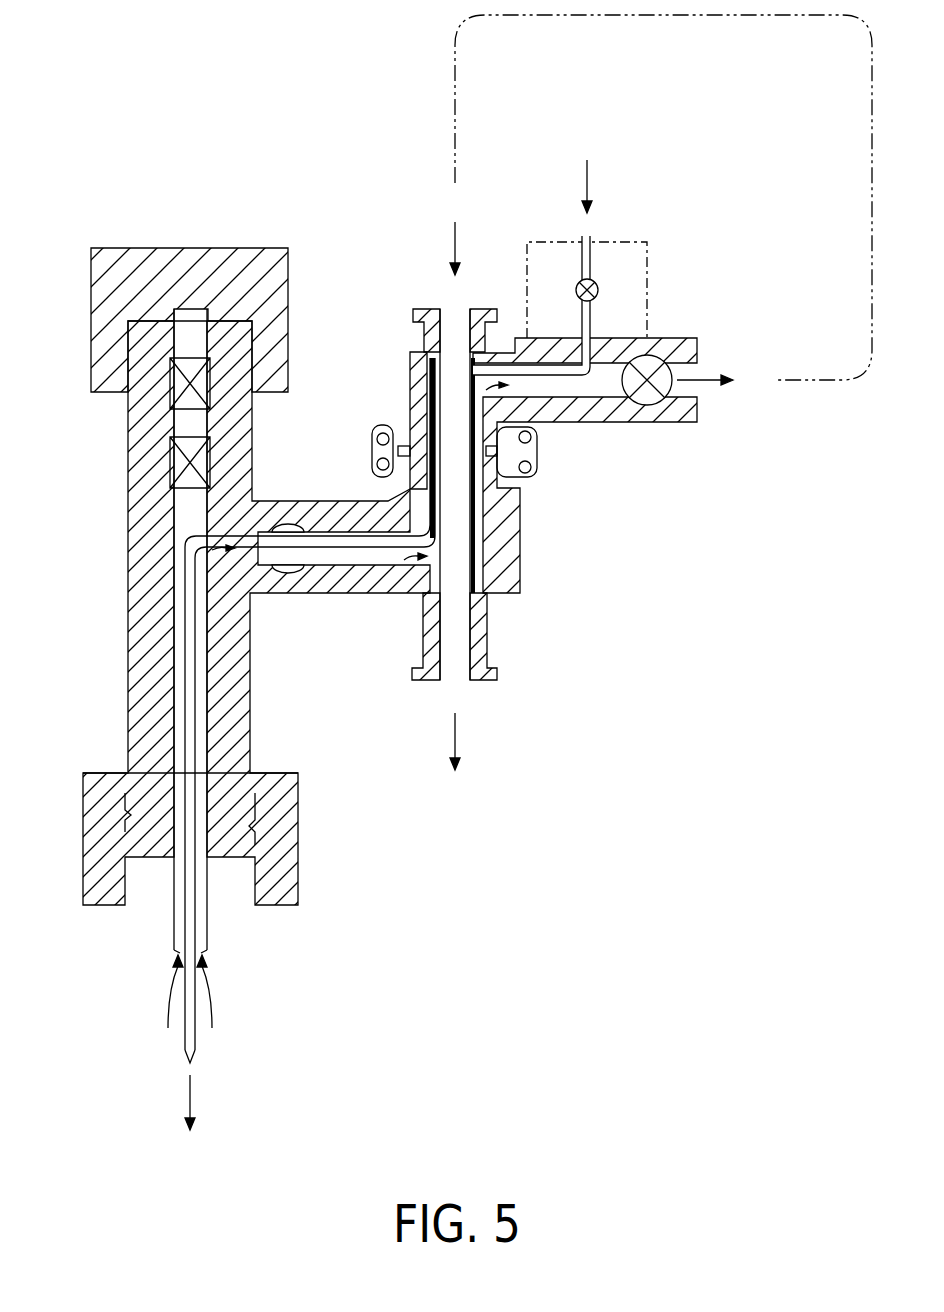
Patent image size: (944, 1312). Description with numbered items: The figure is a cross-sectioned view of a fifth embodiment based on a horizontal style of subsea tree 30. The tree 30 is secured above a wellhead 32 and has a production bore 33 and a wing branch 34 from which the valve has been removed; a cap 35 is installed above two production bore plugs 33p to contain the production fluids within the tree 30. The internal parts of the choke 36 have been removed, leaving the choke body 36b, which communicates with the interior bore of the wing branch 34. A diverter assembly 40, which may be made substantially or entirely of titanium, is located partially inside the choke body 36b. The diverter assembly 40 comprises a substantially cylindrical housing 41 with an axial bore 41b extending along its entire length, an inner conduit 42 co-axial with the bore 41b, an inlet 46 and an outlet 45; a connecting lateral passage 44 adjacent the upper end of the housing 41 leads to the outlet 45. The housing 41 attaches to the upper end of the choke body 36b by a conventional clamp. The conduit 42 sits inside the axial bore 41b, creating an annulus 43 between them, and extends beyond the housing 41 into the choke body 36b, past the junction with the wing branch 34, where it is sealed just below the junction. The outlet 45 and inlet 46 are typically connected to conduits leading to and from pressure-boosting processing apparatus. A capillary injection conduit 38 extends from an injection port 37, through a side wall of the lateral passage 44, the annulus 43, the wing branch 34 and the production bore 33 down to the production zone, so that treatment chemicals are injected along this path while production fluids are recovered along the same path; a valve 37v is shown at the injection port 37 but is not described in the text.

The subsea tree 30 is at (127, 507).
The wellhead 32 is at (234, 891).
The production bore 33 is at (204, 704).
The production bore plugs 33p is at (180, 458).
The wing branch 34 is at (348, 555).
The cap 35 is at (206, 262).
The choke 36 is at (592, 440).
The choke body 36b is at (521, 532).
The injection port 37 is at (636, 268).
The supply valve 37v is at (598, 285).
The capillary injection conduit 38 is at (192, 1055).
The diverter assembly 40 is at (398, 332).
The housing 41 is at (411, 360).
The axial bore 41b is at (475, 437).
The inner conduit 42 is at (432, 405).
The annulus 43 is at (478, 540).
The lateral passage 44 is at (612, 368).
The outlet 45 is at (683, 374).
The inlet 46 is at (456, 318).